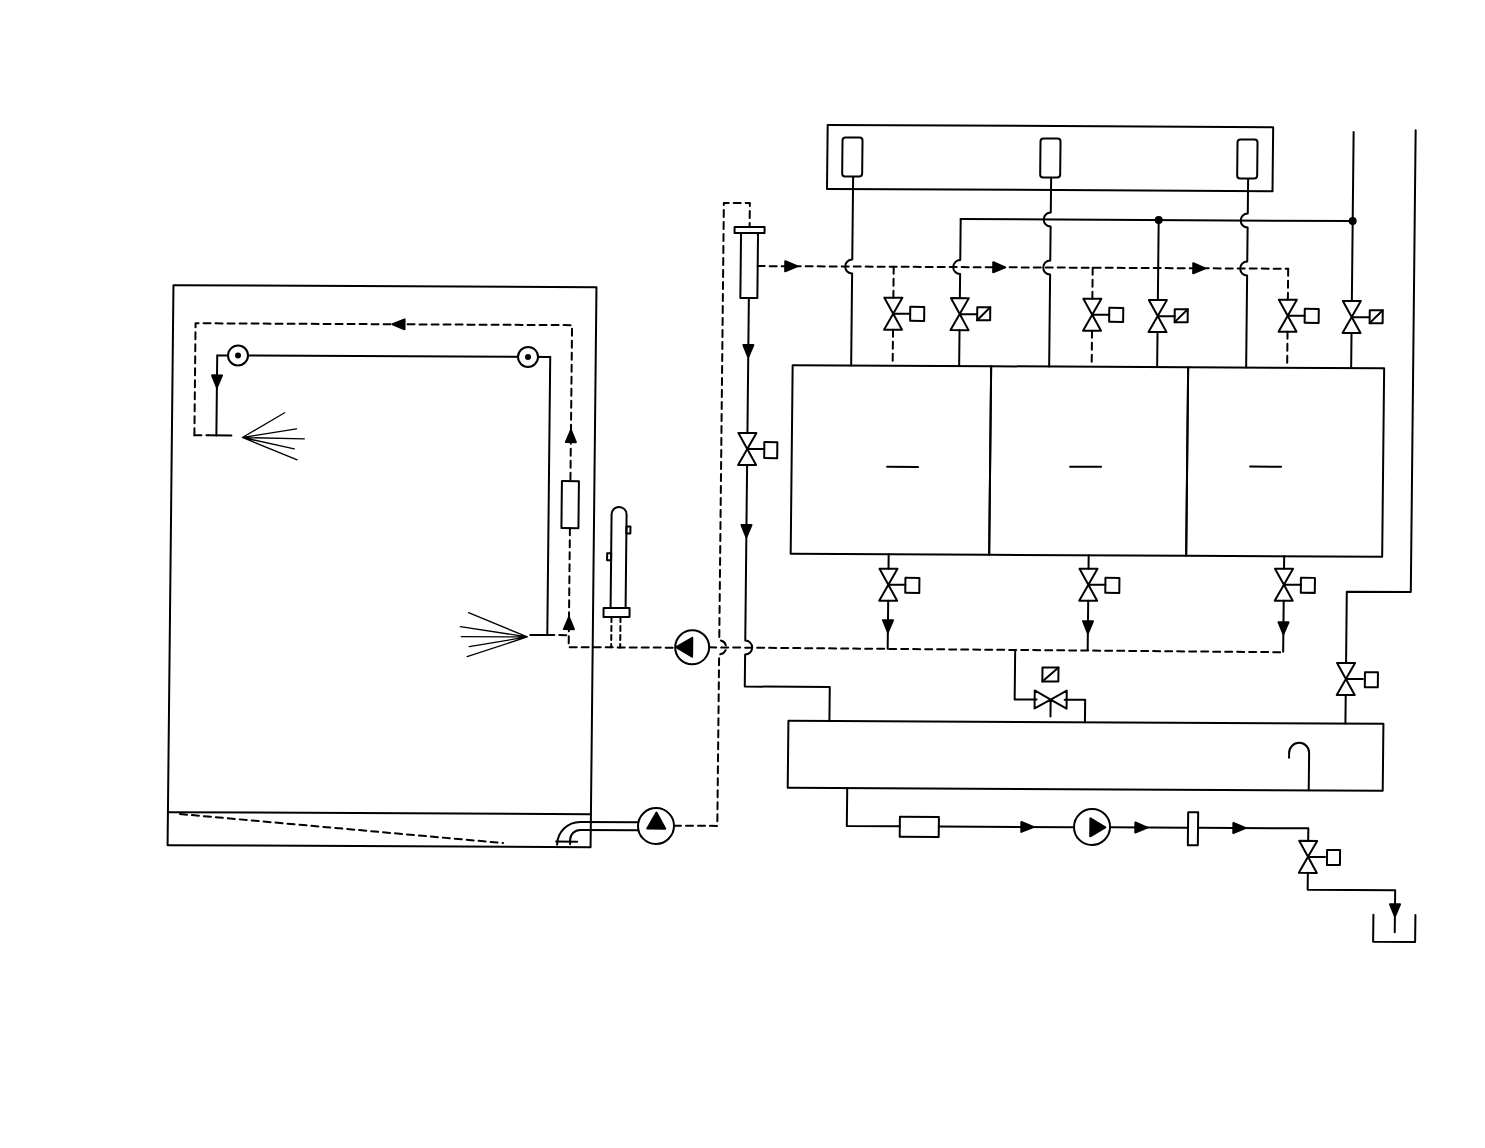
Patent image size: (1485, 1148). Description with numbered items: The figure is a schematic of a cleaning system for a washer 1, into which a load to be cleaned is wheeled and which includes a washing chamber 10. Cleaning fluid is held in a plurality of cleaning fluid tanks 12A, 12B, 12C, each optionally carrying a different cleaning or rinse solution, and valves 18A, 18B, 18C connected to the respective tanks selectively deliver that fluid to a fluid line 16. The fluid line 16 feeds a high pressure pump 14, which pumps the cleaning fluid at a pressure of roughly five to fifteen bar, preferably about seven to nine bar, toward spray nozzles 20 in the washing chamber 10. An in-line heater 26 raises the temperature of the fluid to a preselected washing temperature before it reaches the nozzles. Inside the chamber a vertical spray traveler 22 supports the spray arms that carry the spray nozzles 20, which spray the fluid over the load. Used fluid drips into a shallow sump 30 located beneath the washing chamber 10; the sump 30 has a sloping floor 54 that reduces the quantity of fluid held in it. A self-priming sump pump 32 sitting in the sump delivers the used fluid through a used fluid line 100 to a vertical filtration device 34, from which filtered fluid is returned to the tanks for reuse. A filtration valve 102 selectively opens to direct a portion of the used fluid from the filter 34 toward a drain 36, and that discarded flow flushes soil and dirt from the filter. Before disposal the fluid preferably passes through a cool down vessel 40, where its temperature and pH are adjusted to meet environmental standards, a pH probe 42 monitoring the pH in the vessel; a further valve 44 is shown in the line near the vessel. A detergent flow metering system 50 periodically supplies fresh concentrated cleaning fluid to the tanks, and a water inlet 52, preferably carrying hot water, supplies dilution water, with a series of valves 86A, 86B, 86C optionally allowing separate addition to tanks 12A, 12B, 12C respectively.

The washer 1 is at (581, 216).
The washing chamber 10 is at (437, 311).
The vertical spray traveler 22 is at (308, 356).
The spray nozzles 20 is at (541, 654).
The fluid line 16 is at (649, 648).
The sloping floor 54 is at (345, 832).
The sump 30 is at (515, 819).
The sump pump 32 is at (673, 845).
The used fluid line 100 is at (720, 355).
The vertical filtration device 34 is at (762, 250).
The filtration valve 102 is at (757, 470).
The in-line heater 26 is at (614, 509).
The high pressure pump 14 is at (685, 666).
The detergent flow metering system 50 is at (1045, 120).
The water inlet 52 is at (1346, 145).
The valve 86A is at (995, 322).
The valve 86B is at (1195, 322).
The valve 86C is at (1363, 297).
The cleaning fluid tank 12A is at (891, 459).
The cleaning fluid tank 12B is at (1088, 460).
The cleaning fluid tank 12C is at (1285, 461).
The valve 18A is at (880, 589).
The valve 18B is at (1080, 588).
The valve 18C is at (1275, 587).
The valve 44 is at (1077, 689).
The cool down vessel 40 is at (1394, 759).
The pH probe 42 is at (1203, 838).
The drain 36 is at (1414, 901).